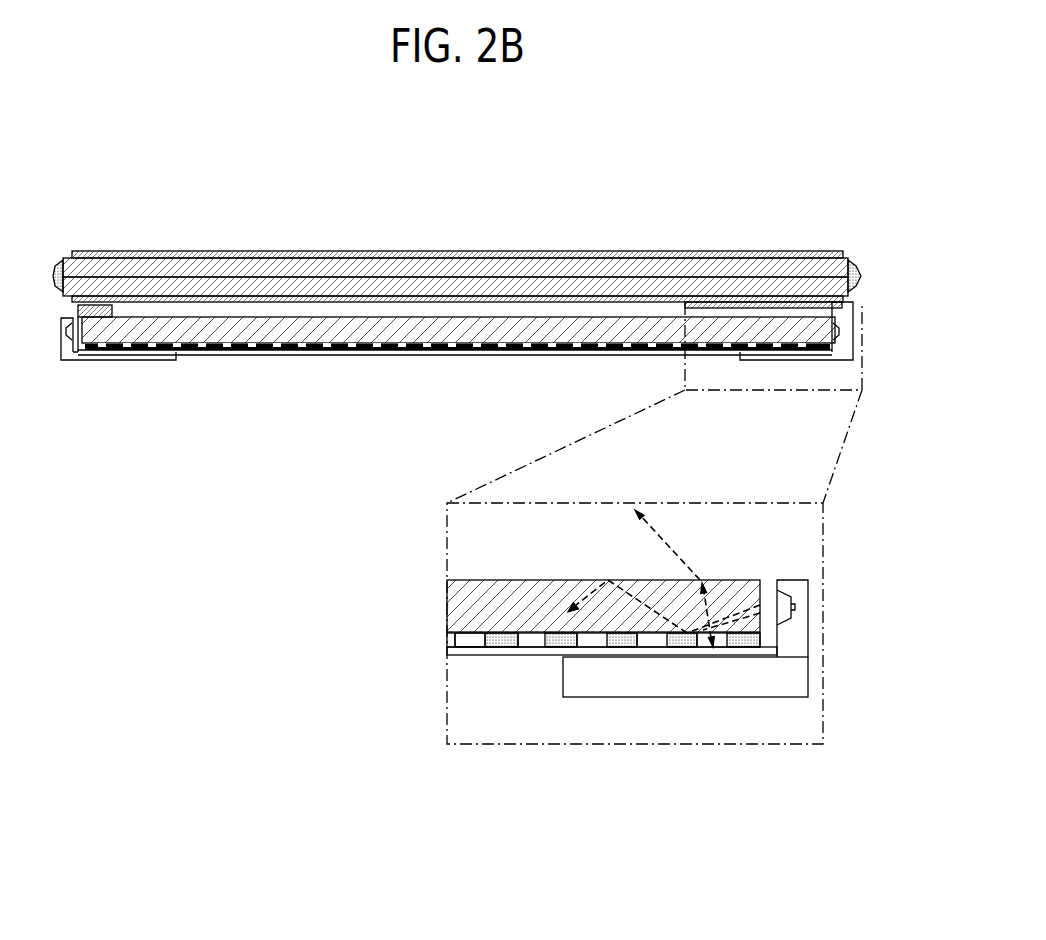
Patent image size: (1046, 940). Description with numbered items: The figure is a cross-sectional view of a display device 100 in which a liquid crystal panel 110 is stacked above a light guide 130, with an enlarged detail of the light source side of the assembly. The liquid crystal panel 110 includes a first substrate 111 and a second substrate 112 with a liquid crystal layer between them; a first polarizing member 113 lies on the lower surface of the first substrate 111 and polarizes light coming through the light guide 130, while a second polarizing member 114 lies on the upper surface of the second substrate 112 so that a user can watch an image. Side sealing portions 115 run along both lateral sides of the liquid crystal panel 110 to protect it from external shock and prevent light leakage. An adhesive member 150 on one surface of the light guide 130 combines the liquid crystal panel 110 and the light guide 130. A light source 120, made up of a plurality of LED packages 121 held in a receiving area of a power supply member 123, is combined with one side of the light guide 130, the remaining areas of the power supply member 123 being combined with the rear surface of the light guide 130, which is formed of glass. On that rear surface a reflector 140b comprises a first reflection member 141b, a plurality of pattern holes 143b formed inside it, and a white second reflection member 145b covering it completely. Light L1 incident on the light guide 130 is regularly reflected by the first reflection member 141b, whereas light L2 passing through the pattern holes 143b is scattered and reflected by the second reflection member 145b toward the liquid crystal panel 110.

The display device 100 is at (159, 124).
The liquid crystal panel 110 is at (593, 174).
The first substrate 111 is at (417, 288).
The second substrate 112 is at (472, 272).
The first polarizing member 113 is at (528, 296).
The second polarizing member 114 is at (580, 257).
The side sealing portion 115 is at (860, 272).
The adhesive member 150 is at (805, 308).
The light source 120 is at (137, 436).
The LED package 121 is at (68, 356).
The power supply member 123 is at (120, 360).
The light guide 130 is at (245, 348).
The reflector 140b is at (470, 436).
The first reflection member 141b is at (322, 350).
The pattern hole 143b is at (388, 351).
The second reflection member 145b is at (462, 352).
The light L1 is at (637, 598).
The light L2 is at (708, 612).